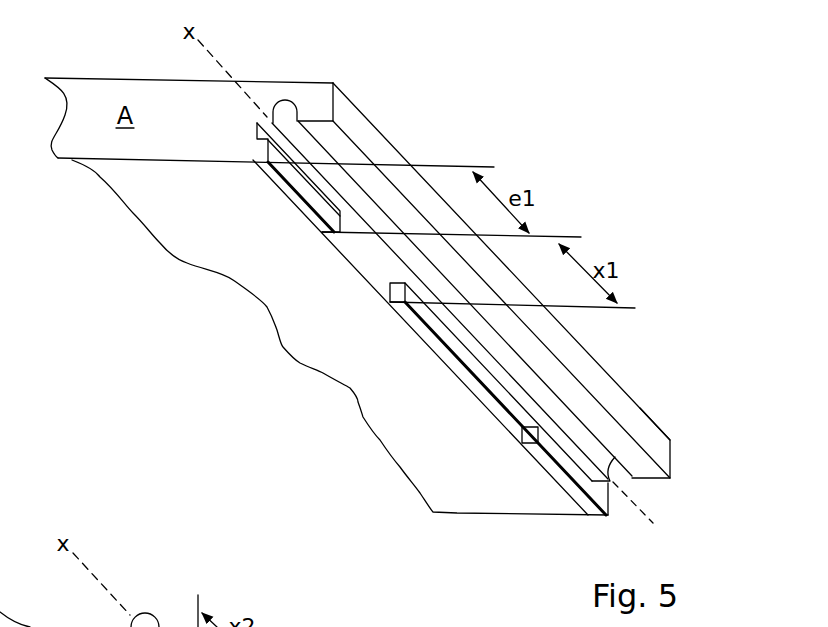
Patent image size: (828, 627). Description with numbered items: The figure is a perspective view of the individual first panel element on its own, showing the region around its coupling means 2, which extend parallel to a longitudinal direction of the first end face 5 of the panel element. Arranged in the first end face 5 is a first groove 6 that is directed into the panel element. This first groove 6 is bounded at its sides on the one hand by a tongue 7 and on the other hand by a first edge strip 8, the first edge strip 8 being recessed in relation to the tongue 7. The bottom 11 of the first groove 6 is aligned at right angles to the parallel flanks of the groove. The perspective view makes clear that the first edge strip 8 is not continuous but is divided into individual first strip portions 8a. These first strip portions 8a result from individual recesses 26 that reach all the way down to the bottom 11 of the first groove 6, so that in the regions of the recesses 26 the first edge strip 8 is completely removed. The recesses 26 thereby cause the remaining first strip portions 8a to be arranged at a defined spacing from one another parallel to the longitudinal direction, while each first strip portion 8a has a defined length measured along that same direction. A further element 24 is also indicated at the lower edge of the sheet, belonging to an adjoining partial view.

The coupling means 2 is at (645, 499).
The first end face 5 is at (613, 208).
The first groove 6 is at (614, 494).
The tongue 7 is at (652, 434).
The first edge strip 8 is at (255, 151).
The first strip portions 8a is at (293, 188).
The bottom of the first groove 11 is at (495, 382).
The groove element 24 is at (105, 625).
The recesses 26 is at (365, 265).